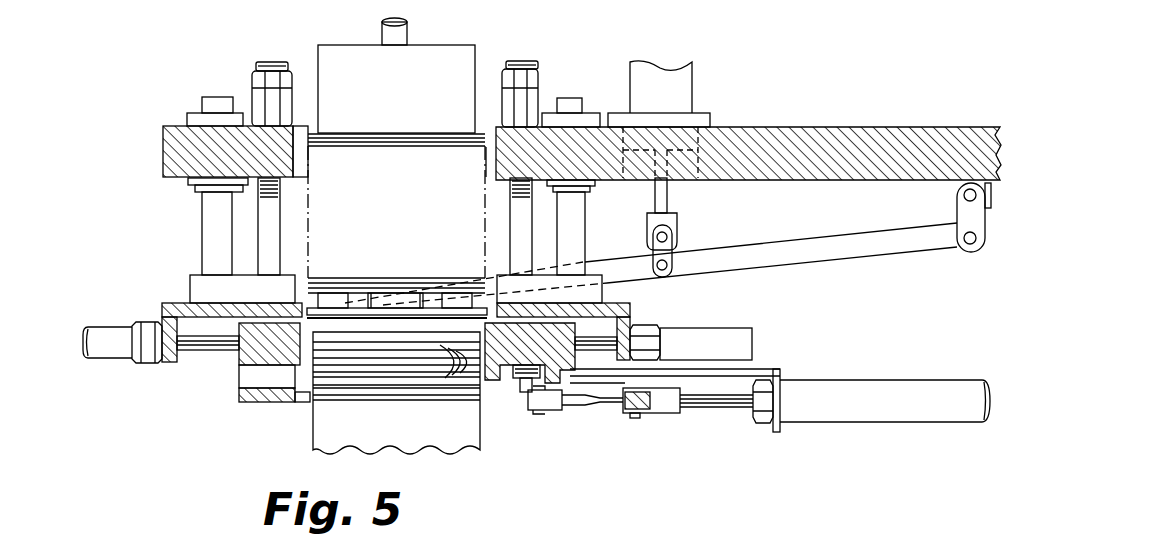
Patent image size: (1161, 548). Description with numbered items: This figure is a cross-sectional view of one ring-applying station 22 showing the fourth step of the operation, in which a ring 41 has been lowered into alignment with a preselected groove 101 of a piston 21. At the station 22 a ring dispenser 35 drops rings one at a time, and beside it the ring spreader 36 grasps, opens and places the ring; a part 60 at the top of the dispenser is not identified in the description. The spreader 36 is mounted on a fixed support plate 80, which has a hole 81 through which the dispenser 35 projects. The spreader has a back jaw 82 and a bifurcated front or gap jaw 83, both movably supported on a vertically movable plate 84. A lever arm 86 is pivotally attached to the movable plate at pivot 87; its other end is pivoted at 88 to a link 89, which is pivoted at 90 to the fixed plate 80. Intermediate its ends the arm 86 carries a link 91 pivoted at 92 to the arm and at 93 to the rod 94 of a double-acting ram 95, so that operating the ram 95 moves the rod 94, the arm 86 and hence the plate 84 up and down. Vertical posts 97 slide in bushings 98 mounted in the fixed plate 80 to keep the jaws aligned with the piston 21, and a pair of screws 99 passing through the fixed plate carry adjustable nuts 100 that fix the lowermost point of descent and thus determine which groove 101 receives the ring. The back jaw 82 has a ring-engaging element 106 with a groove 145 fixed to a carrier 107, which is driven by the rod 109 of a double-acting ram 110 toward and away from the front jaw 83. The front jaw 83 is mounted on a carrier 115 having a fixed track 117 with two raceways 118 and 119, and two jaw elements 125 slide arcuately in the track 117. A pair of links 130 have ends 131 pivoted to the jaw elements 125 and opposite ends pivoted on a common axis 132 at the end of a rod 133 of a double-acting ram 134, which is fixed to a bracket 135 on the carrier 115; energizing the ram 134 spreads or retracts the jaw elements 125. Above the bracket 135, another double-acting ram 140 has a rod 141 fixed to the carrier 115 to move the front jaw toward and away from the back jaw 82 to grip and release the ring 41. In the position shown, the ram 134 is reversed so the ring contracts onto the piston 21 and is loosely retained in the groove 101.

The piston 21 is at (412, 449).
The station 22 is at (174, 438).
The ring dispenser 35 is at (478, 44).
The ring spreader 36 is at (166, 301).
The ring 41 is at (375, 320).
The motor shaft 60 is at (403, 33).
The support plate 80 is at (827, 145).
The hole 81 is at (485, 152).
The back jaw 82 is at (243, 407).
The front or gap jaw 83 is at (500, 405).
The movable plate 84 is at (630, 313).
The lever arm 86 is at (822, 228).
The pivot 87 is at (382, 300).
The pivot 88 is at (968, 247).
The link 89 is at (967, 222).
The pivot 90 is at (963, 196).
The link 91 is at (673, 244).
The pivot 92 is at (669, 265).
The pivot 93 is at (676, 232).
The rod 94 is at (655, 198).
The double-acting ram 95 is at (695, 80).
The vertical posts 97 is at (210, 240).
The bushings 98 is at (208, 186).
The screws 99 is at (282, 226).
The adjustable nuts 100 is at (293, 101).
The groove 101 is at (438, 355).
The ring-engaging element 106 is at (238, 392).
The carrier 107 is at (240, 360).
The rod 109 is at (195, 346).
The double-acting ram 110 is at (104, 358).
The carrier 115 is at (535, 330).
The fixed track 117 is at (562, 381).
The raceway 118 is at (483, 401).
The raceway 119 is at (527, 392).
The jaw elements 125 is at (482, 397).
The links 130 is at (594, 410).
The ends 131 is at (533, 395).
The axis 132 is at (632, 420).
The rod 133 is at (737, 408).
The double-acting ram 134 is at (840, 422).
The bracket 135 is at (755, 369).
The double-acting ram 140 is at (742, 342).
The rod 141 is at (660, 343).
The groove 145 is at (300, 403).